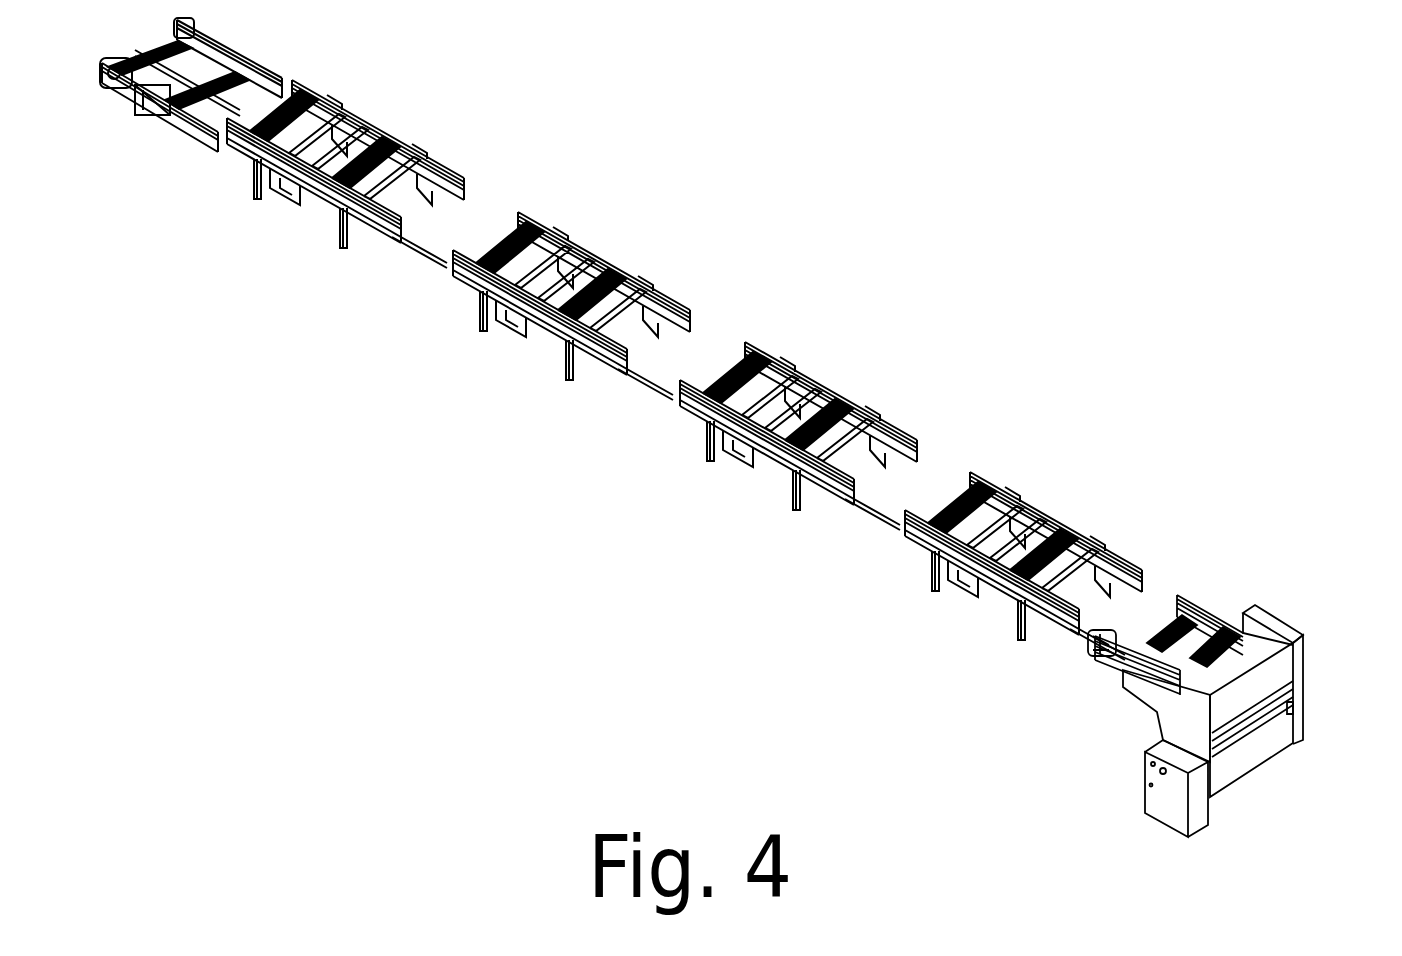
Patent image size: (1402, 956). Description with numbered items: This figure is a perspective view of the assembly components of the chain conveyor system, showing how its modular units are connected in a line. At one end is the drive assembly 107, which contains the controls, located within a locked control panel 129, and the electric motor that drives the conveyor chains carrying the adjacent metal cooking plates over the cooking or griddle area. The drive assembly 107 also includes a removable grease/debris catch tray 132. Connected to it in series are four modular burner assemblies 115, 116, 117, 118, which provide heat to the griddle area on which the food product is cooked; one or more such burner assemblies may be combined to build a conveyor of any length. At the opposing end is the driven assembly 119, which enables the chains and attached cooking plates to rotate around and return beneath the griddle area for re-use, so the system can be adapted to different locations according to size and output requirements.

The drive assembly 107 is at (1277, 617).
The burner assembly 115 is at (983, 595).
The burner assembly 116 is at (762, 462).
The burner assembly 117 is at (542, 340).
The burner assembly 118 is at (335, 218).
The driven assembly 119 is at (143, 107).
The locked control panel 129 is at (1152, 798).
The removable grease/debris catch tray 132 is at (1250, 738).